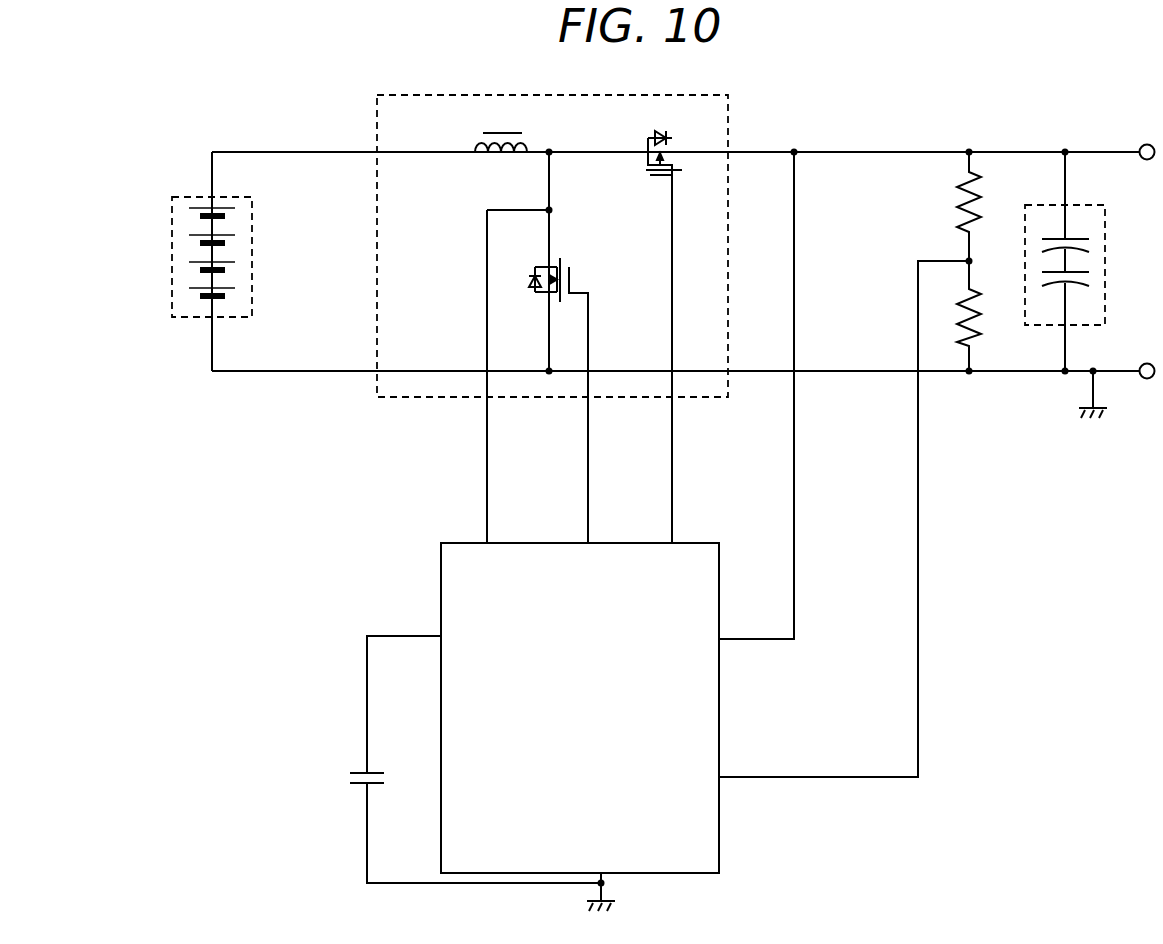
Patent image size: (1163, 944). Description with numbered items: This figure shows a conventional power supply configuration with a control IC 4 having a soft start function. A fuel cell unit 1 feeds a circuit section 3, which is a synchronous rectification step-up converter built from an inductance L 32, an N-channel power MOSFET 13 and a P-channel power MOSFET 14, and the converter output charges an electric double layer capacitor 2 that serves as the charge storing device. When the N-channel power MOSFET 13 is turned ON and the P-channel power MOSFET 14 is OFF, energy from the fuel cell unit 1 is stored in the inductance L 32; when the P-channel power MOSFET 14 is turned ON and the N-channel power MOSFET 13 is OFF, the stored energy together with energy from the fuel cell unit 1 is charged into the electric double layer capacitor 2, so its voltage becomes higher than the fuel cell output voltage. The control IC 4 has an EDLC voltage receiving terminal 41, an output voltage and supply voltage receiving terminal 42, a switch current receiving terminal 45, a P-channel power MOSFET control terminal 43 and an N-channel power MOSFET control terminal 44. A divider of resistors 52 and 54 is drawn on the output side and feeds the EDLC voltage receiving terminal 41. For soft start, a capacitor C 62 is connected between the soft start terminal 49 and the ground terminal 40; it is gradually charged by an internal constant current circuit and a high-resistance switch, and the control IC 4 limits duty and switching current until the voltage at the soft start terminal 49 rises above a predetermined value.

The fuel cell unit 1 is at (191, 197).
The electric double layer capacitor 2 is at (1104, 230).
The circuit section 3 is at (377, 110).
The control IC 4 is at (720, 853).
The N-channel power MOSFET 13 is at (553, 256).
The P-channel power MOSFET 14 is at (663, 136).
The inductance L 32 is at (497, 128).
The GND terminal 40 is at (606, 890).
The EDLC voltage receiving terminal (FBout) 41 is at (759, 777).
The output voltage and supply voltage receiving terminal (Vout) 42 is at (759, 639).
The P-channel power MOSFET control terminal (TG) 43 is at (673, 506).
The N-channel power MOSFET control terminal (BG) 44 is at (589, 506).
The switch current receiving terminal (SENSE) 45 is at (488, 503).
The soft start terminal (SS terminal) 49 is at (398, 636).
The feedback resistor 52 is at (981, 199).
The feedback resistor 54 is at (975, 336).
The capacitor C 62 is at (348, 778).